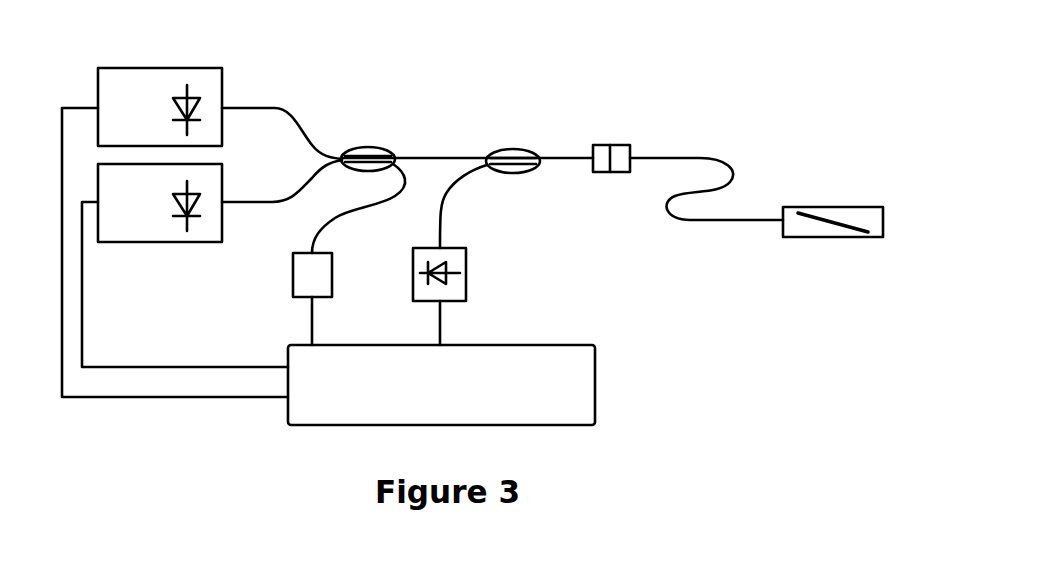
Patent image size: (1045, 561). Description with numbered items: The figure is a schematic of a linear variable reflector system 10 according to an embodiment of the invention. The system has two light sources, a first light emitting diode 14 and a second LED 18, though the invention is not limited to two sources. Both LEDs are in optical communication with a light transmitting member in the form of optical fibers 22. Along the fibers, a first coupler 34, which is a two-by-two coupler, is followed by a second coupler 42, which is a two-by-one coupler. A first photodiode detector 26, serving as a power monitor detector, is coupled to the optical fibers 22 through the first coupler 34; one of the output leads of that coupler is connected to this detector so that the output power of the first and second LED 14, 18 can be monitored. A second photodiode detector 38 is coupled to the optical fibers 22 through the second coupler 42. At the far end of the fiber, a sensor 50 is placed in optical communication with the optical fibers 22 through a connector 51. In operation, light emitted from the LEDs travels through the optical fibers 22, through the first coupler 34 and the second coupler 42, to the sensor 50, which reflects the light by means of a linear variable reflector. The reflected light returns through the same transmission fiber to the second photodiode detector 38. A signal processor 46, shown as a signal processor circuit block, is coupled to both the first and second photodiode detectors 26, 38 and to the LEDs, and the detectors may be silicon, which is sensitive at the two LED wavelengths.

The linear variable reflector system 10 is at (598, 45).
The first light emitting diode 14 is at (196, 68).
The second LED 18 is at (162, 242).
The optical fibers 22 is at (292, 120).
The first photodiode detector 26 is at (332, 262).
The first coupler 34 is at (375, 148).
The second photodiode detector 38 is at (466, 259).
The second coupler 42 is at (518, 150).
The signal processor 46 is at (596, 383).
The sensor 50 is at (883, 237).
The connector 51 is at (621, 148).